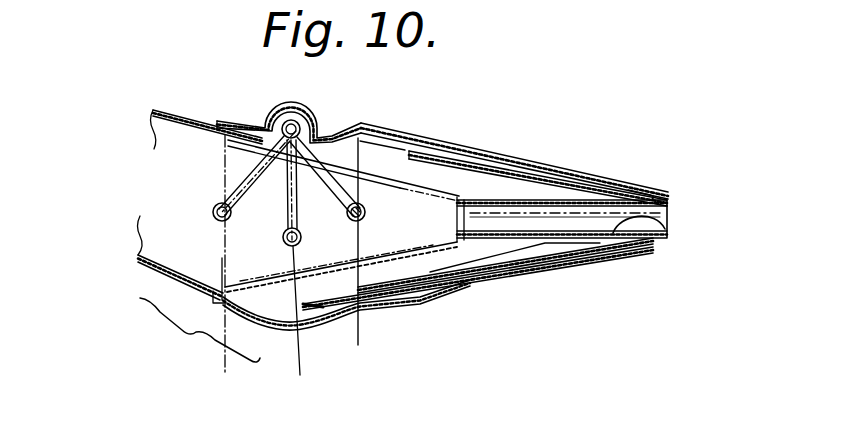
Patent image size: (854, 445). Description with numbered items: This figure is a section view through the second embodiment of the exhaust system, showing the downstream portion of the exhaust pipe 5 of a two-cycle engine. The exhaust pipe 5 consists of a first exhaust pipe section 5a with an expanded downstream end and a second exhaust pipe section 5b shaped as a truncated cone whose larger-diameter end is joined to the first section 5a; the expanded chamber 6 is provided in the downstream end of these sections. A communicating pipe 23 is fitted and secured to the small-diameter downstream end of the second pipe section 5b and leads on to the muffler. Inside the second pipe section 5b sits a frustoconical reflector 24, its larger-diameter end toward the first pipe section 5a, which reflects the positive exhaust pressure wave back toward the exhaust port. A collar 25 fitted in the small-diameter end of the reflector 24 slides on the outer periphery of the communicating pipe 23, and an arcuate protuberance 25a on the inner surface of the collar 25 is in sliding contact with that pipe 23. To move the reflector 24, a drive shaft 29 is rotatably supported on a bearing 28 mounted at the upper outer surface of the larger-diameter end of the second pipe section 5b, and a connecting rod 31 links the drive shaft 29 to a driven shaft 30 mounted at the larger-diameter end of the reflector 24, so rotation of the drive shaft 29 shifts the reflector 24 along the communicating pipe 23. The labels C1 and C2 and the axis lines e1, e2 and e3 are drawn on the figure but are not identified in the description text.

The first case half C1 is at (207, 205).
The second case half C2 is at (346, 146).
The exhaust pipe 5 is at (200, 332).
The first exhaust pipe section 5a is at (187, 275).
The second exhaust pipe section 5b is at (503, 163).
The expanded chamber 6 is at (274, 237).
The communicating pipe 23 is at (641, 199).
The reflector 24 is at (461, 272).
The collar 25 is at (607, 198).
The arcuate protuberance 25a is at (664, 223).
The bearing 28 is at (303, 118).
The drive shaft 29 is at (280, 121).
The driven shaft 30 is at (353, 219).
The connecting rod 31 is at (332, 185).
The first pivot axis e1 is at (227, 268).
The second pivot axis e2 is at (299, 324).
The third pivot axis e3 is at (359, 255).